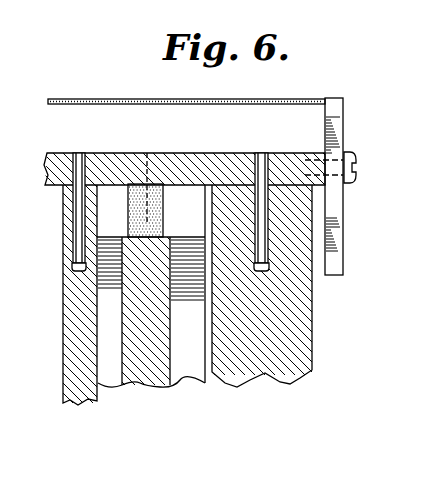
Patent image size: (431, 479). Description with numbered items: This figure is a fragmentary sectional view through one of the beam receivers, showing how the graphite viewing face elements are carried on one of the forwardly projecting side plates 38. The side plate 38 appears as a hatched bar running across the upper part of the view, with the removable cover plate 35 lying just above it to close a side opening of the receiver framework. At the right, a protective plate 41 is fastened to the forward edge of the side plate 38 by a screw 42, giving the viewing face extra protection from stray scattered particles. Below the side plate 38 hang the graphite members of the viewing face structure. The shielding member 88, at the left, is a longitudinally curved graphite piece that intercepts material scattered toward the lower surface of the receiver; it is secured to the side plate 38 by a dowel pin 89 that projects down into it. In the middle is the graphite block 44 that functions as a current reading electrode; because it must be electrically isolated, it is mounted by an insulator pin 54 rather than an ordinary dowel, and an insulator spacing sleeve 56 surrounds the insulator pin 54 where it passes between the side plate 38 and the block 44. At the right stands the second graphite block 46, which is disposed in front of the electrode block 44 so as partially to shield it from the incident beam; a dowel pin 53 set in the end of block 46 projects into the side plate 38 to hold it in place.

The cover plate 35 is at (104, 99).
The dowel pin 89 is at (78, 153).
The insulator pin 54 is at (147, 153).
The side plate 38 is at (208, 153).
The dowel pin 53 is at (262, 153).
The screw 42 is at (356, 162).
The plate 41 is at (345, 229).
The insulator spacing sleeve 56 is at (163, 213).
The shielding member 88 is at (78, 403).
The graphite block 44 is at (160, 386).
The graphite block 46 is at (266, 375).